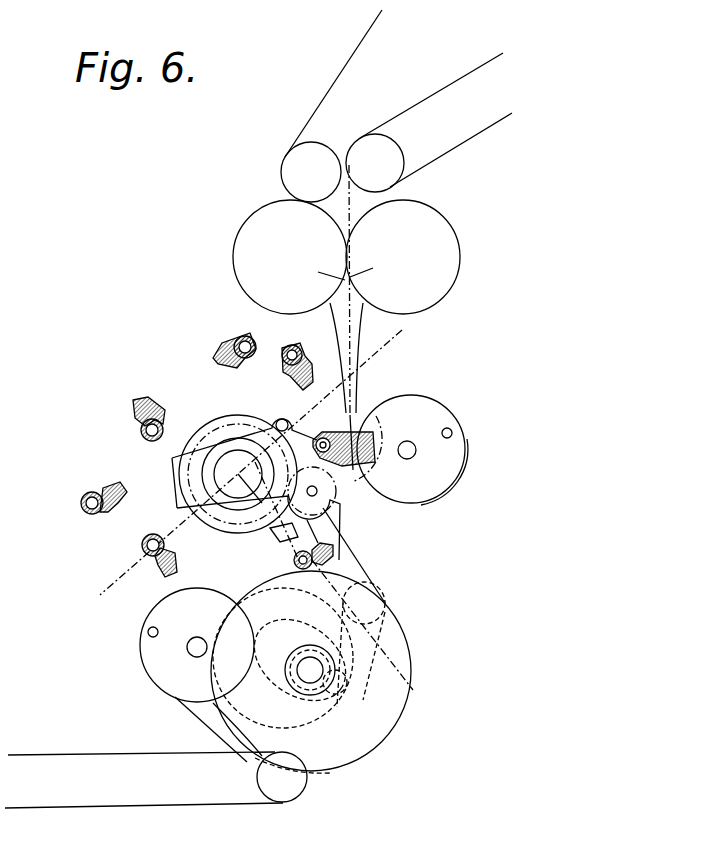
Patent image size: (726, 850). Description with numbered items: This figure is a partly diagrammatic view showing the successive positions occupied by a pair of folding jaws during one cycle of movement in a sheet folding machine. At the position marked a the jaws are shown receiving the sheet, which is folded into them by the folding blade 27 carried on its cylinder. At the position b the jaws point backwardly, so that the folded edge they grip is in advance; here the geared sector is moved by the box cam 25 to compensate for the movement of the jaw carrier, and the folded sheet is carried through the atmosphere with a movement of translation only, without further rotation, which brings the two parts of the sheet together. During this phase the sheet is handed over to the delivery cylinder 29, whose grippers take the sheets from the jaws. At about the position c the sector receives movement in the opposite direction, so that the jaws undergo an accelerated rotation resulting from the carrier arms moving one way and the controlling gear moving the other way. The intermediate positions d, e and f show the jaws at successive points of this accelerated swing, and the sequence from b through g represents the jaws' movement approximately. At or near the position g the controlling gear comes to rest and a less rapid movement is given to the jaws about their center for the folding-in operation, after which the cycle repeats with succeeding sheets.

The folding blade 27 is at (355, 462).
The delivery cylinder 29 is at (162, 684).
The box cam 25 is at (327, 712).
The folding jaws position a is at (325, 467).
The folding jaws position b is at (328, 555).
The folding jaws position c is at (158, 570).
The folding jaws position d is at (95, 513).
The folding jaws position e is at (138, 402).
The folding jaws position f is at (222, 342).
The folding jaws position g is at (285, 348).